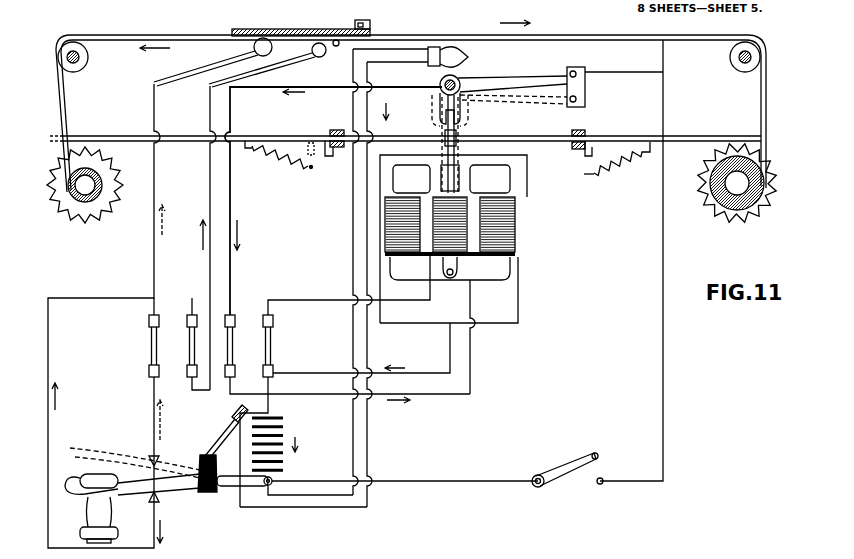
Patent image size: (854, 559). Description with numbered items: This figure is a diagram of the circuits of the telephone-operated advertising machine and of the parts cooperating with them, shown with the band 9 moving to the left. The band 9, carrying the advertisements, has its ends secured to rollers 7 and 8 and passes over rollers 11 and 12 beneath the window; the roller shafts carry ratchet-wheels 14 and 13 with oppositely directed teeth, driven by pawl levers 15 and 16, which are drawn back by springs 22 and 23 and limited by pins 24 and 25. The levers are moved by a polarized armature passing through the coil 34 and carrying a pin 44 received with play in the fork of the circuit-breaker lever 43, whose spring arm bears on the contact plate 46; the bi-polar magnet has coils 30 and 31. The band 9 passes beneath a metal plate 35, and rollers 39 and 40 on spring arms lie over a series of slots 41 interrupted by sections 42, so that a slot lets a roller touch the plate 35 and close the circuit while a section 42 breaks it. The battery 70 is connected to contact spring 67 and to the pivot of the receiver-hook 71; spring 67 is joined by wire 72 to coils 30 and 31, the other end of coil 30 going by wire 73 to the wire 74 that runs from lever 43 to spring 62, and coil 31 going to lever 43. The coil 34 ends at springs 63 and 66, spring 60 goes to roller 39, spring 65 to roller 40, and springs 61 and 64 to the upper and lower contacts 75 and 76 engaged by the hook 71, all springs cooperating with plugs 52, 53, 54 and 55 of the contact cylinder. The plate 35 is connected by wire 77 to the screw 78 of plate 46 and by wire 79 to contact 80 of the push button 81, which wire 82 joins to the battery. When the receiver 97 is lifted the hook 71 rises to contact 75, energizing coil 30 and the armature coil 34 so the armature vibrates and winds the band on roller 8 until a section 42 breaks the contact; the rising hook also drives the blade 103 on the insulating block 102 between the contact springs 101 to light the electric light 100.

The roller 7 is at (742, 225).
The roller 8 is at (66, 206).
The band 9 is at (711, 36).
The roller 11 is at (75, 45).
The roller 12 is at (752, 46).
The ratchet-wheel 13 is at (117, 236).
The ratchet-wheel 14 is at (712, 206).
The pawl lever 15 is at (130, 136).
The pawl lever 16 is at (614, 136).
The spring 22 is at (279, 165).
The spring 23 is at (619, 170).
The pin 24 is at (339, 155).
The pin 25 is at (572, 150).
The coil 30 is at (384, 218).
The coil 31 is at (516, 228).
The coil 34 is at (468, 237).
The metal plate 35 is at (301, 22).
The roller 39 is at (263, 56).
The roller 40 is at (318, 57).
The slot 41 is at (433, 24).
The section 42 is at (336, 39).
The forked lever 43 is at (458, 101).
The pin 44 is at (461, 130).
The plate 46 is at (585, 95).
The plug 52 is at (151, 345).
The plug 53 is at (189, 345).
The plug 54 is at (233, 344).
The plug 55 is at (271, 347).
The contact spring 60 is at (149, 322).
The contact spring 61 is at (182, 313).
The contact spring 62 is at (236, 320).
The contact spring 63 is at (273, 322).
The contact spring 64 is at (149, 374).
The contact spring 65 is at (187, 378).
The contact spring 66 is at (236, 372).
The contact spring 67 is at (274, 375).
The battery 70 is at (286, 432).
The receiver-hook 71 is at (224, 488).
The wire 72 is at (412, 372).
The wire 73 is at (378, 128).
The wire 74 is at (325, 87).
The upper contact 75 is at (152, 457).
The lower contact 76 is at (158, 500).
The wire 77 is at (630, 35).
The screw 78 is at (576, 73).
The wire 79 is at (660, 320).
The contact 80 is at (603, 478).
The push button 81 is at (565, 465).
The wire 82 is at (441, 480).
The receiver 97 is at (90, 515).
The electric light 100 is at (466, 57).
The contact springs 101 is at (212, 452).
The block 102 is at (205, 492).
The blade 103 is at (200, 438).